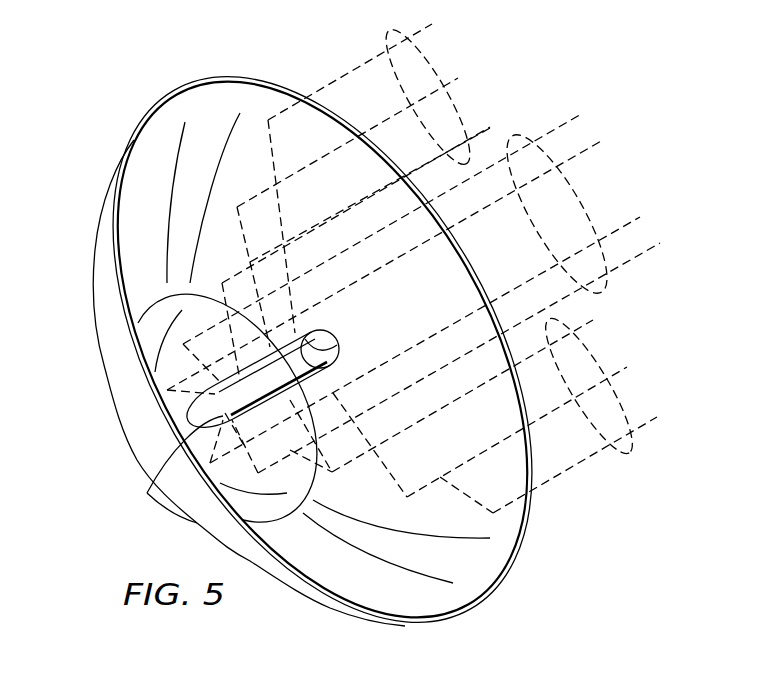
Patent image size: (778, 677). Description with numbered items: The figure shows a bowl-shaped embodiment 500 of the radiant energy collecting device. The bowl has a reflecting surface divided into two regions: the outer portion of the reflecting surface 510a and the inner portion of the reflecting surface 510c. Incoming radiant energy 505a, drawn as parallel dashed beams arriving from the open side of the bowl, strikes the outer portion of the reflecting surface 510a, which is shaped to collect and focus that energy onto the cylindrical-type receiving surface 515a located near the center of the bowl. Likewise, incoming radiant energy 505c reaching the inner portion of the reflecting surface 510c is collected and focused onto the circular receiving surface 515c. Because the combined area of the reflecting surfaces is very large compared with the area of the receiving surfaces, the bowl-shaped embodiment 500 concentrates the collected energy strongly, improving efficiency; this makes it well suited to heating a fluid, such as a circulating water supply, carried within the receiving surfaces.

The bowl-shaped embodiment 500 is at (160, 60).
The incoming radiant energy 505a is at (393, 28).
The incoming radiant energy 505c is at (603, 292).
The outer portion of the reflecting surface 510a is at (520, 558).
The inner portion of the reflecting surface 510c is at (117, 428).
The cylindrical-type receiving surface 515a is at (333, 343).
The circular receiving surface 515c is at (143, 493).